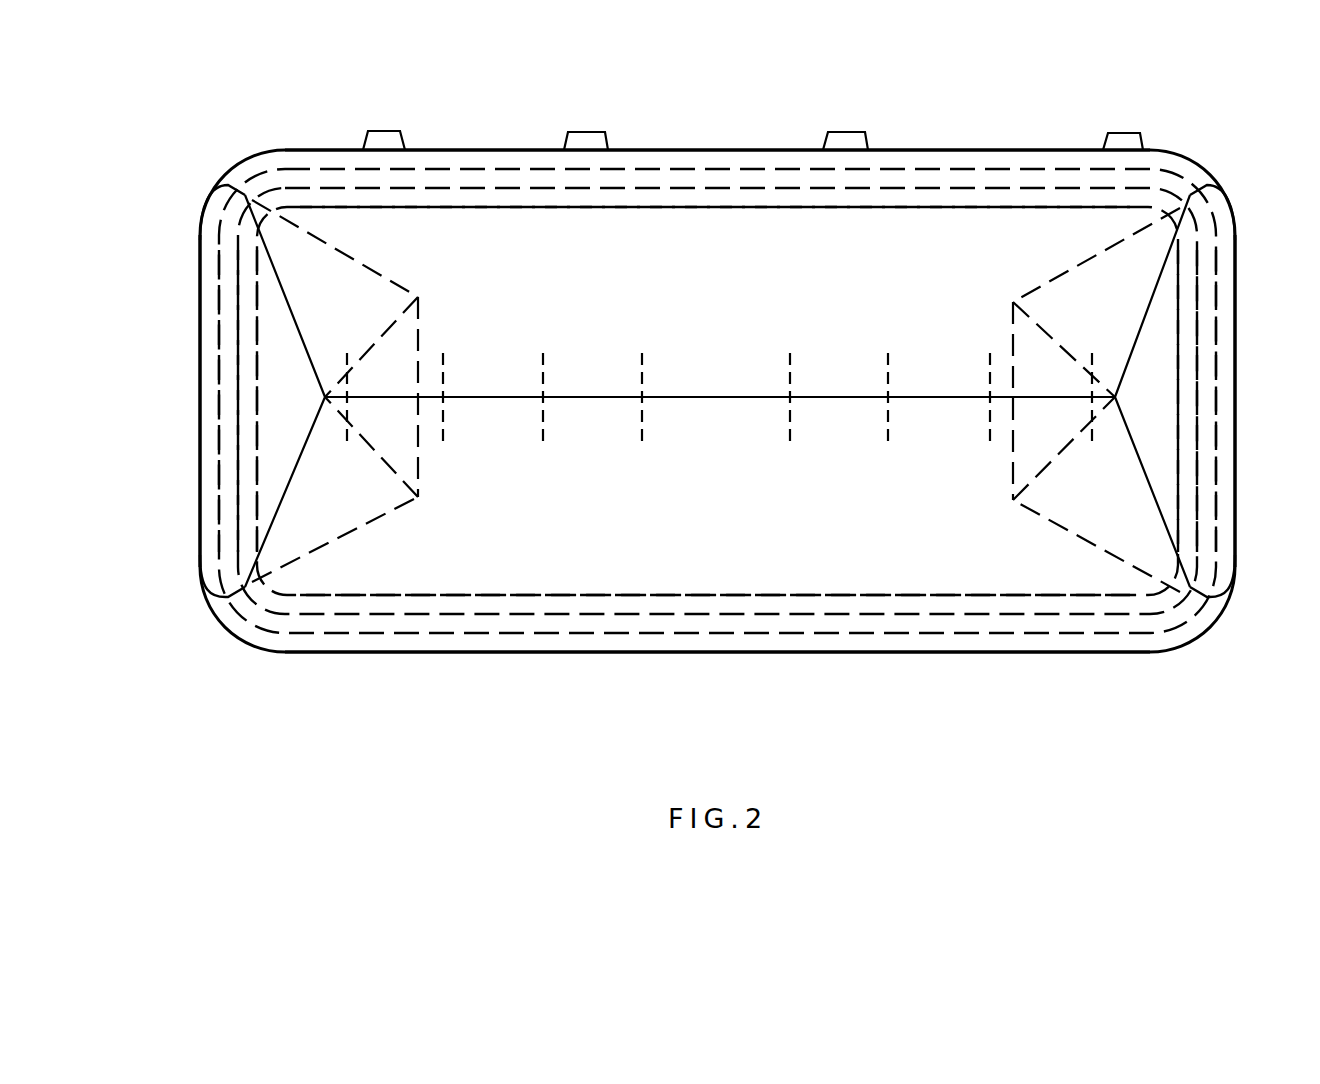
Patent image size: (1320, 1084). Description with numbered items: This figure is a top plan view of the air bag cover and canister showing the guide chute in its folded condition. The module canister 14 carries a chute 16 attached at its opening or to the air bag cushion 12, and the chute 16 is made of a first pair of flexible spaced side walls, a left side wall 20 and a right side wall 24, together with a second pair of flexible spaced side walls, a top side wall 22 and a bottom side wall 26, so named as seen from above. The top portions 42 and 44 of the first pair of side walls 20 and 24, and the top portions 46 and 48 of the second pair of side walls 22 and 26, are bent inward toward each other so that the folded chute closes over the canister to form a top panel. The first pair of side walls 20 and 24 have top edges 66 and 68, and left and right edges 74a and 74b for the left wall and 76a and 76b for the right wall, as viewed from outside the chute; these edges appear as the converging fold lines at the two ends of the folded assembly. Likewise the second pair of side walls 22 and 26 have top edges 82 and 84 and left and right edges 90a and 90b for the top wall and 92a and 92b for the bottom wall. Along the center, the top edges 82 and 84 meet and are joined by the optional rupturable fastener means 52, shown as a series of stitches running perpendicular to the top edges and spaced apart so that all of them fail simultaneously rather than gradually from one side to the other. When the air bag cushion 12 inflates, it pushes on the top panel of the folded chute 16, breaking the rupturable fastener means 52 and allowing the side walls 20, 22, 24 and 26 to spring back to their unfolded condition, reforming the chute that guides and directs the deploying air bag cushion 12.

The air bag cushion 12 is at (613, 213).
The module canister 14 is at (1160, 187).
The chute 16 is at (943, 140).
The left side wall 20 is at (197, 400).
The top side wall 22 is at (795, 150).
The right side wall 24 is at (1238, 405).
The bottom side wall 26 is at (842, 653).
The top portion of left side wall 42 is at (268, 331).
The top portion of right side wall 44 is at (1166, 330).
The top portion of top side wall 46 is at (520, 213).
The top portion of bottom side wall 48 is at (637, 582).
The rupturable fastener means 52 is at (641, 383).
The top edge of left side wall 66 is at (423, 343).
The top edge of right side wall 68 is at (1008, 344).
The left edge of left side wall 74a is at (385, 279).
The right edge of left side wall 74b is at (324, 543).
The left edge of right side wall 76a is at (1145, 572).
The right edge of right side wall 76b is at (1053, 282).
The top edge of top side wall 82 is at (833, 397).
The top edge of bottom side wall 84 is at (836, 400).
The left edge of top side wall 90a is at (1078, 264).
The right edge of top side wall 90b is at (340, 247).
The left edge of bottom side wall 92a is at (369, 528).
The right edge of bottom side wall 92b is at (1122, 569).